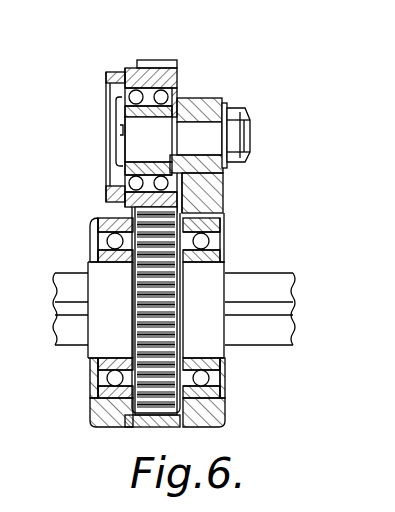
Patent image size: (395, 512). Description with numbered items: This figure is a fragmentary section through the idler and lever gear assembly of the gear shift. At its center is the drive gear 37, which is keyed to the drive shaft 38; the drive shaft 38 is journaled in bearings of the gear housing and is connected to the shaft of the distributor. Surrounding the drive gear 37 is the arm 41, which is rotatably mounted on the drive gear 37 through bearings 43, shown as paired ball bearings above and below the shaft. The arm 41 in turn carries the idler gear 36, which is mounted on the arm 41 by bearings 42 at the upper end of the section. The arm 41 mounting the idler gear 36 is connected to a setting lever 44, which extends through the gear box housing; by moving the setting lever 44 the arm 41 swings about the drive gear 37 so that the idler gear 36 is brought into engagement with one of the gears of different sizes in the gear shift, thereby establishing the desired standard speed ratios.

The idler gear 36 is at (153, 61).
The drive gear 37 is at (152, 318).
The drive shaft 38 is at (272, 340).
The arm 41 is at (226, 191).
The bearings 42 is at (170, 96).
The bearings 43 is at (108, 240).
The setting lever 44 is at (226, 418).